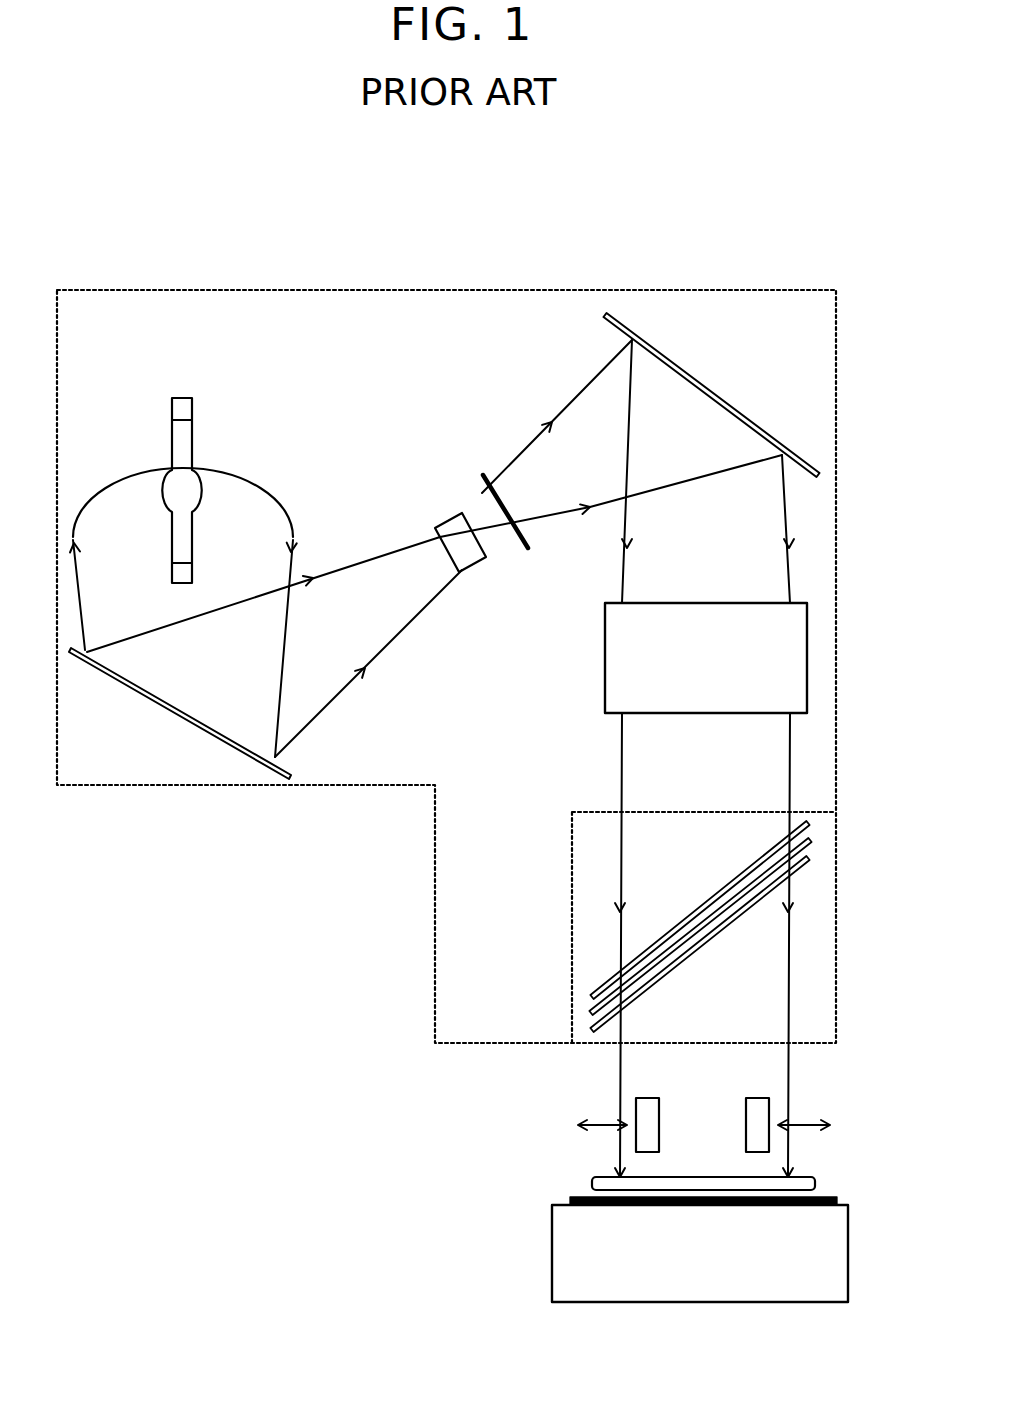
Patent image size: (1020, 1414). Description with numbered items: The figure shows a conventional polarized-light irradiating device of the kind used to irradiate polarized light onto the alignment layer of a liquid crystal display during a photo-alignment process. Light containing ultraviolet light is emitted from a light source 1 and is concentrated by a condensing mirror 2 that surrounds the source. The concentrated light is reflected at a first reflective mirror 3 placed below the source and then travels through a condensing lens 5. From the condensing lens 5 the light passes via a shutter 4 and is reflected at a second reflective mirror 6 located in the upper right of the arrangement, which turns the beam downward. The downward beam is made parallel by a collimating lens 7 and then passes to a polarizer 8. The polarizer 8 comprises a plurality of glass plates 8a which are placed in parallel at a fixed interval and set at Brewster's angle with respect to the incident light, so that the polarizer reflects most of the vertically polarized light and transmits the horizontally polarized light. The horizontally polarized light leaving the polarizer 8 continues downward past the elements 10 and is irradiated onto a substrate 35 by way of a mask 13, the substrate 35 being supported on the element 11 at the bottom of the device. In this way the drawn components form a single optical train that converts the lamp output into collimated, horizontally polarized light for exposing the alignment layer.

The light source 1 is at (207, 493).
The condensing mirror 2 is at (102, 488).
The first reflective mirror 3 is at (180, 713).
The shutter 4 is at (528, 548).
The condensing lens 5 is at (462, 513).
The second reflective mirror 6 is at (712, 395).
The collimating lens 7 is at (605, 676).
The polarizer 8 is at (574, 870).
The glass plates 8a is at (598, 975).
The light blocking members 10 is at (620, 1108).
The stage 11 is at (552, 1246).
The mask 13 is at (592, 1178).
The substrate 35 is at (572, 1198).